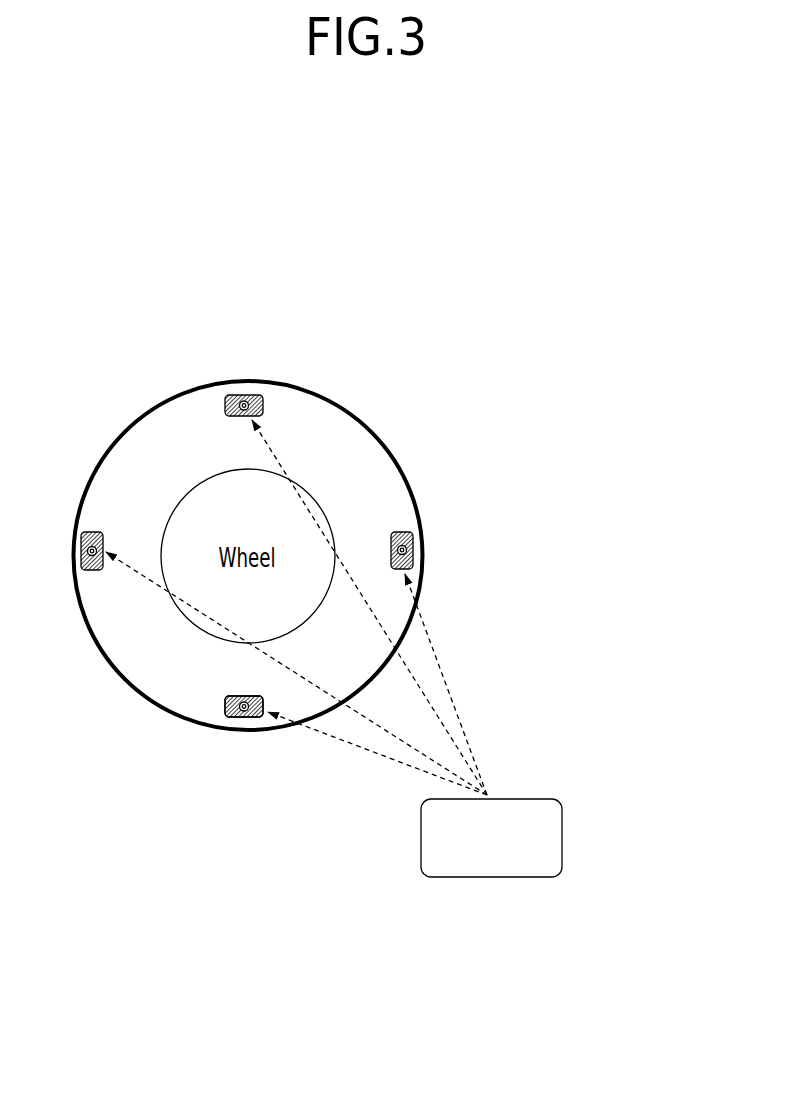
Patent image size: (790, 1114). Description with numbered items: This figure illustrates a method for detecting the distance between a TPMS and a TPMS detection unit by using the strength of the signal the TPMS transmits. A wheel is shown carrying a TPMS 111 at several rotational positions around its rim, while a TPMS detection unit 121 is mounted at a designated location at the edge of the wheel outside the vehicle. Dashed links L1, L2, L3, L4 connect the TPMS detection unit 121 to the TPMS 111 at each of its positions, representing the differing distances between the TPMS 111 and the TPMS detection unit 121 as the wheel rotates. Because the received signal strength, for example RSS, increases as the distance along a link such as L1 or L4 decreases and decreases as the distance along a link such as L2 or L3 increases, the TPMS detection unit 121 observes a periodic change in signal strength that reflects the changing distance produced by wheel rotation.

The TPMS (Tire Pressure Monitoring System) 111 is at (276, 399).
The TPMS detection unit 121 is at (572, 815).
The communication link to first sensor L1 is at (369, 607).
The communication link to second sensor L2 is at (296, 673).
The communication link to third sensor L3 is at (377, 753).
The communication link to fourth sensor L4 is at (446, 684).